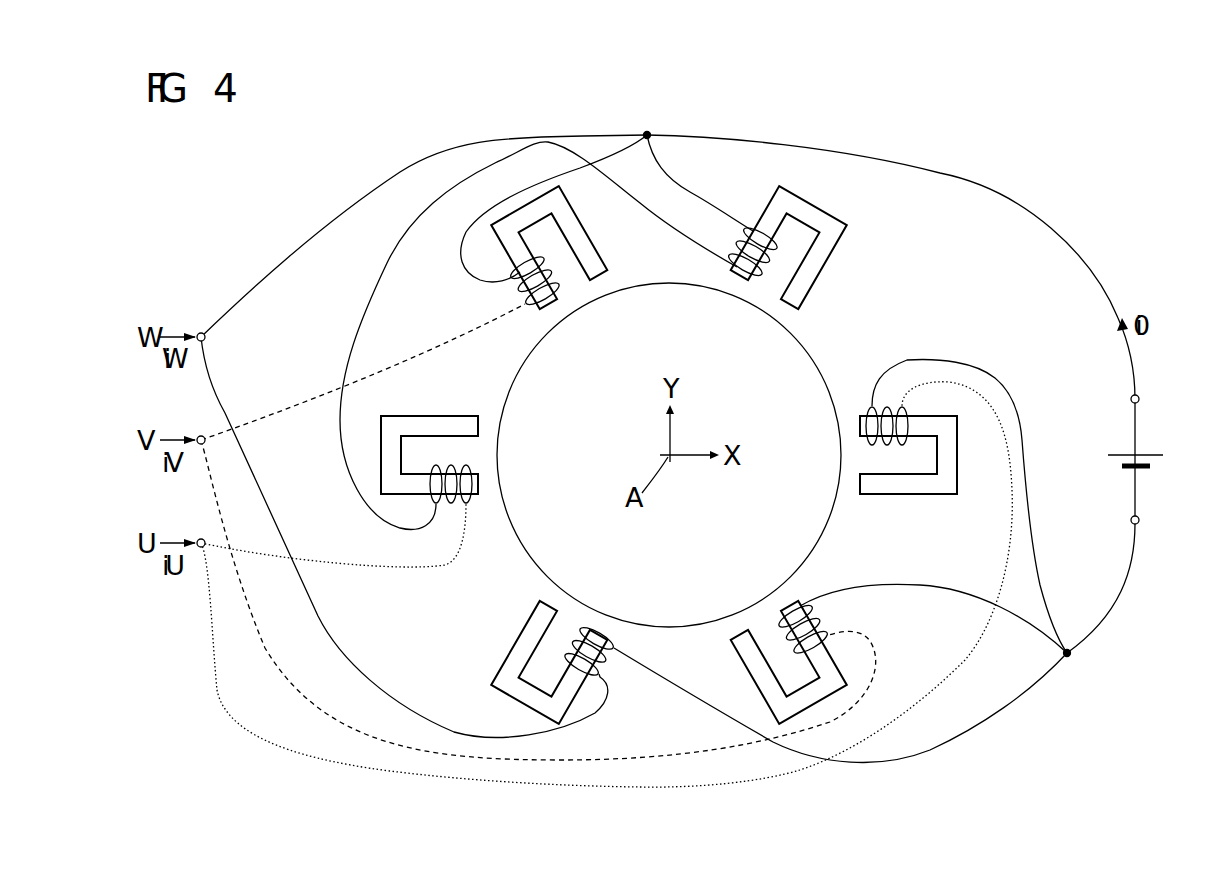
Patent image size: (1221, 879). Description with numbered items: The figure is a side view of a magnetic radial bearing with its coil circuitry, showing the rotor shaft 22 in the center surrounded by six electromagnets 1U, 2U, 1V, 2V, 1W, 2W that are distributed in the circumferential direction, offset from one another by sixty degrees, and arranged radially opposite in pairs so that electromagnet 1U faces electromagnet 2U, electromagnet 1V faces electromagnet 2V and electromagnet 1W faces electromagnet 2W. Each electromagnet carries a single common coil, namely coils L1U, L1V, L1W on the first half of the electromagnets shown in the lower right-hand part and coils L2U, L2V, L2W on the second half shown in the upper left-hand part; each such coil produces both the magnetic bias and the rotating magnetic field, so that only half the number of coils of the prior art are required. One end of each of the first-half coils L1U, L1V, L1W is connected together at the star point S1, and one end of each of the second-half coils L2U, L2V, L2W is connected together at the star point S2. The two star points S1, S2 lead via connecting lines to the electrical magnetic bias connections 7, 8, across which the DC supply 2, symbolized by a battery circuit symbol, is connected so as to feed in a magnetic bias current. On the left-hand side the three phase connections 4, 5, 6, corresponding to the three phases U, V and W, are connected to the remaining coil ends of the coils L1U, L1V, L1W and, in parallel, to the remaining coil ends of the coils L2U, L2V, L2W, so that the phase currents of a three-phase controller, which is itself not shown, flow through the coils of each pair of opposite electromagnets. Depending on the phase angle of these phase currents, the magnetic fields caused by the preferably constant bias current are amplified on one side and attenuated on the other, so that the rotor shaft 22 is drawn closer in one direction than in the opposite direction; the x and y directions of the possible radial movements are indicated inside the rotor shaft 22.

The DC supply 2 is at (1140, 452).
The phase connection 4 is at (201, 537).
The phase connection 5 is at (201, 434).
The phase connection 6 is at (201, 331).
The electrical magnetic bias connection 7 is at (1140, 518).
The electrical magnetic bias connection 8 is at (1140, 398).
The rotor shaft 22 is at (812, 345).
The electromagnet 1U is at (943, 480).
The electromagnet 1V is at (745, 656).
The electromagnet 1W is at (505, 676).
The electromagnet 2U is at (458, 420).
The electromagnet 2V is at (585, 242).
The electromagnet 2W is at (813, 220).
The coil L1U is at (912, 383).
The coil L1V is at (815, 612).
The coil L1W is at (603, 673).
The coil L2U is at (455, 507).
The coil L2V is at (517, 280).
The coil L2W is at (740, 225).
The star point S1 is at (1070, 656).
The star point S2 is at (647, 131).